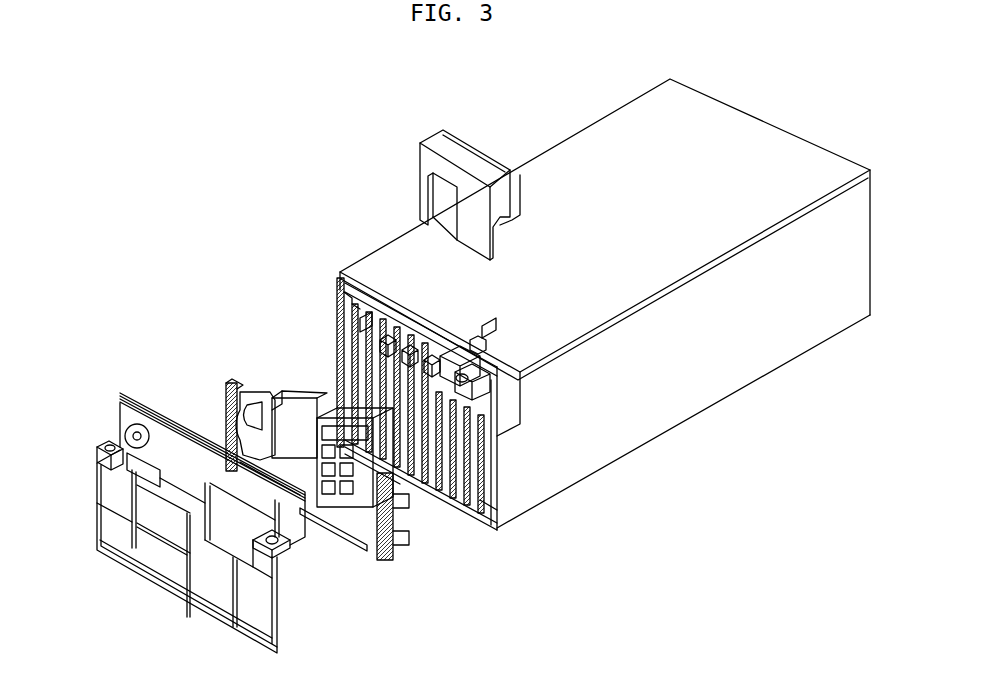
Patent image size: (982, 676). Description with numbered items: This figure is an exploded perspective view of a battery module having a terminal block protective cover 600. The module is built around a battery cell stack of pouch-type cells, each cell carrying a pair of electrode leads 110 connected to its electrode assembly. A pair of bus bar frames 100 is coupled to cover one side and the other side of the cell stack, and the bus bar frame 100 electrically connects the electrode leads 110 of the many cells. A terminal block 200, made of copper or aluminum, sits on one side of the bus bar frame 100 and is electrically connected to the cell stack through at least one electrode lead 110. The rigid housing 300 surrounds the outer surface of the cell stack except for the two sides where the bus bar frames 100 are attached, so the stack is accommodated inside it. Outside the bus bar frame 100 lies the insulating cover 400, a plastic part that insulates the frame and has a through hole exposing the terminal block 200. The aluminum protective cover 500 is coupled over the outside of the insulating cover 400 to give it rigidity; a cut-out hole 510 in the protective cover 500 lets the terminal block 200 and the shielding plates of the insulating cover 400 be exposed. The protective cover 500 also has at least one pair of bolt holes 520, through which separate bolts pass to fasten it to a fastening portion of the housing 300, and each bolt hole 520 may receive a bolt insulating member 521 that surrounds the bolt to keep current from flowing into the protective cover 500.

The bus bar frame 100 is at (333, 305).
The electrode lead 110 is at (496, 481).
The terminal block 200 is at (485, 388).
The housing 300 is at (757, 137).
The insulating cover 400 is at (402, 548).
The protective cover 500 is at (288, 598).
The cut-out hole 510 is at (213, 442).
The bolt hole 520 is at (100, 442).
The bolt insulating member 521 is at (290, 545).
The terminal block protective cover 600 is at (420, 163).